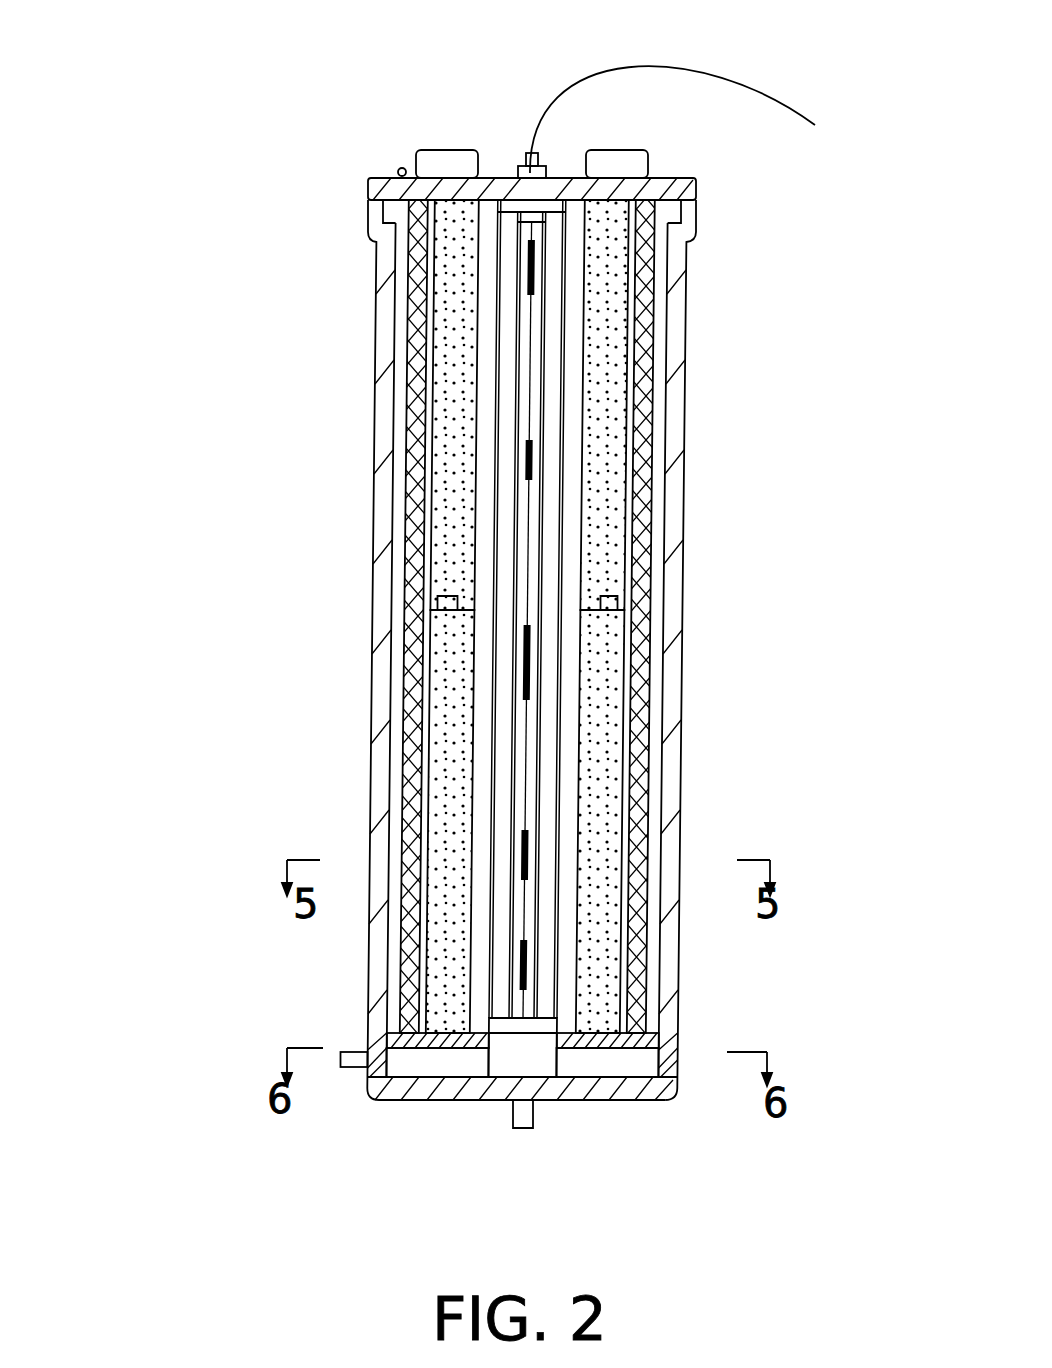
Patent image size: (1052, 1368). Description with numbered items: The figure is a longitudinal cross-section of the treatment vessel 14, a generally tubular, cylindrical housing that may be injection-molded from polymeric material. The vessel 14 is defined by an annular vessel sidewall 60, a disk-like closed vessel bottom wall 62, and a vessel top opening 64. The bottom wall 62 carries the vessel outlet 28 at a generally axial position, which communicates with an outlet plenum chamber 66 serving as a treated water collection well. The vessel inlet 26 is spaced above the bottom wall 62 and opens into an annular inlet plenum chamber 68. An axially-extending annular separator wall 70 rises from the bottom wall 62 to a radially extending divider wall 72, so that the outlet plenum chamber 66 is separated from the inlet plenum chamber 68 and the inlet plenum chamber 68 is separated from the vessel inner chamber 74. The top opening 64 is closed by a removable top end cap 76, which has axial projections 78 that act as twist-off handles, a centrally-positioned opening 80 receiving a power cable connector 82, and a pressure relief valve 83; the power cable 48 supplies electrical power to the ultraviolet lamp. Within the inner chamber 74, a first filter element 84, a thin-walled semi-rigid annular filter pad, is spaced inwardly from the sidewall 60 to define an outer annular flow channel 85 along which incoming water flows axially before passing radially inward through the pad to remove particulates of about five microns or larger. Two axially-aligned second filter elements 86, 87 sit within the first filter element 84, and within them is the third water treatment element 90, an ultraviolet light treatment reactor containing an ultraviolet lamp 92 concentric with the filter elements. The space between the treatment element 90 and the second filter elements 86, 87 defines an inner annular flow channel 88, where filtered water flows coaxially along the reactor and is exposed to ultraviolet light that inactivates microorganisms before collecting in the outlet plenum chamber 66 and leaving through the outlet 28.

The treatment vessel 14 is at (203, 205).
The vessel inlet 26 is at (347, 1050).
The vessel outlet 28 is at (540, 1107).
The power cable 48 is at (725, 76).
The vessel sidewall 60 is at (370, 570).
The vessel bottom wall 62 is at (627, 1102).
The vessel top opening 64 is at (692, 213).
The outlet plenum chamber 66 is at (507, 1057).
The inlet plenum chamber 68 is at (370, 1093).
The separator wall 70 is at (423, 1067).
The divider wall 72 is at (390, 953).
The vessel inner chamber 74 is at (402, 648).
The top end cap 76 is at (369, 176).
The axial projections 78 is at (440, 153).
The centrally-positioned opening 80 is at (548, 175).
The power cable connector 82 is at (513, 177).
The pressure relief valve 83 is at (402, 168).
The first filter element 84 is at (405, 720).
The outer annular flow channel 85 is at (398, 750).
The second filter element 86 is at (443, 782).
The second filter element 87 is at (440, 380).
The inner annular flow channel 88 is at (487, 433).
The third water treatment element 90 is at (493, 833).
The ultraviolet lamp 92 is at (520, 877).